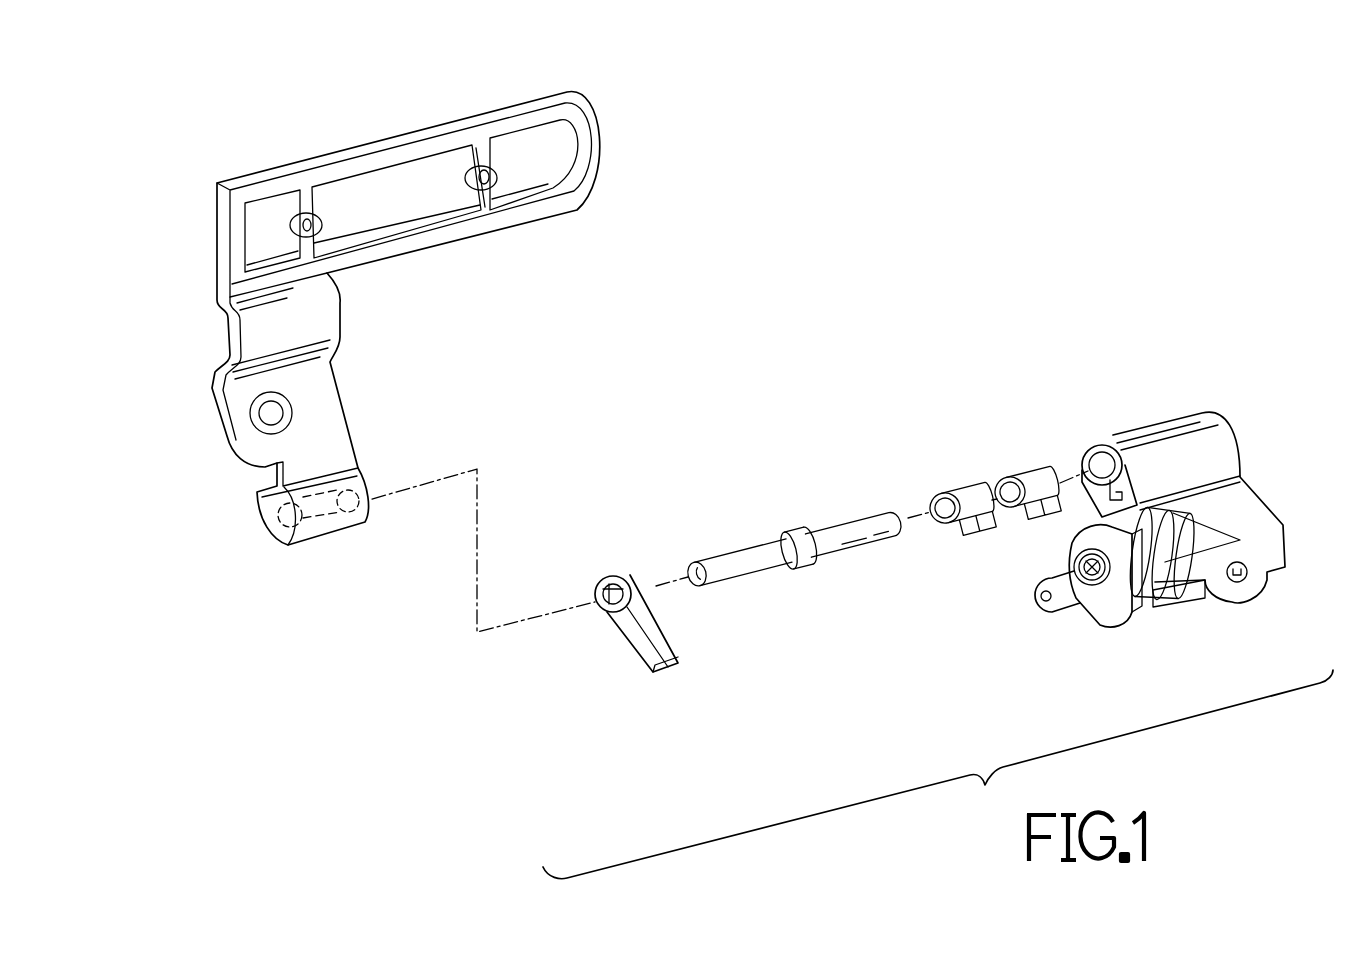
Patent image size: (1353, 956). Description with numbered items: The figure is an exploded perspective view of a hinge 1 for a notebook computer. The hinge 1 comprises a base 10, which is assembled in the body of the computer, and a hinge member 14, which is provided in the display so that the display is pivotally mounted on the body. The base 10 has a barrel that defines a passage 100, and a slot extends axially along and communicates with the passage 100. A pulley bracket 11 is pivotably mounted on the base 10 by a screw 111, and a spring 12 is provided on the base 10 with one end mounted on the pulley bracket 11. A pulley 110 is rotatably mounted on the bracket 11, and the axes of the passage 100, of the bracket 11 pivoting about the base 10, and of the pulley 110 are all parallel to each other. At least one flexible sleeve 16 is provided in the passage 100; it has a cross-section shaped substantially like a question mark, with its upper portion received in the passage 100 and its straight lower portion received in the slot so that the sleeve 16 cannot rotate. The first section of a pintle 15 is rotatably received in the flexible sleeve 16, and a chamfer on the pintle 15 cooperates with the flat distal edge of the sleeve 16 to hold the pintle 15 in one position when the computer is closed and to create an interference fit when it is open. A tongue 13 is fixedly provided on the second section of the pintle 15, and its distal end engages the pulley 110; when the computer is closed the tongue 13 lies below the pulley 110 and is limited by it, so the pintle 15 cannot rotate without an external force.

The hinge 1 is at (631, 112).
The base 10 is at (1277, 550).
The passage 100 is at (1100, 450).
The pulley bracket 11 is at (1100, 624).
The pulley 110 is at (1059, 617).
The screw 111 is at (1067, 543).
The spring 12 is at (1143, 622).
The tongue 13 is at (671, 672).
The hinge member 14 is at (250, 338).
The pintle 15 is at (769, 526).
The flexible sleeve 16 is at (962, 483).